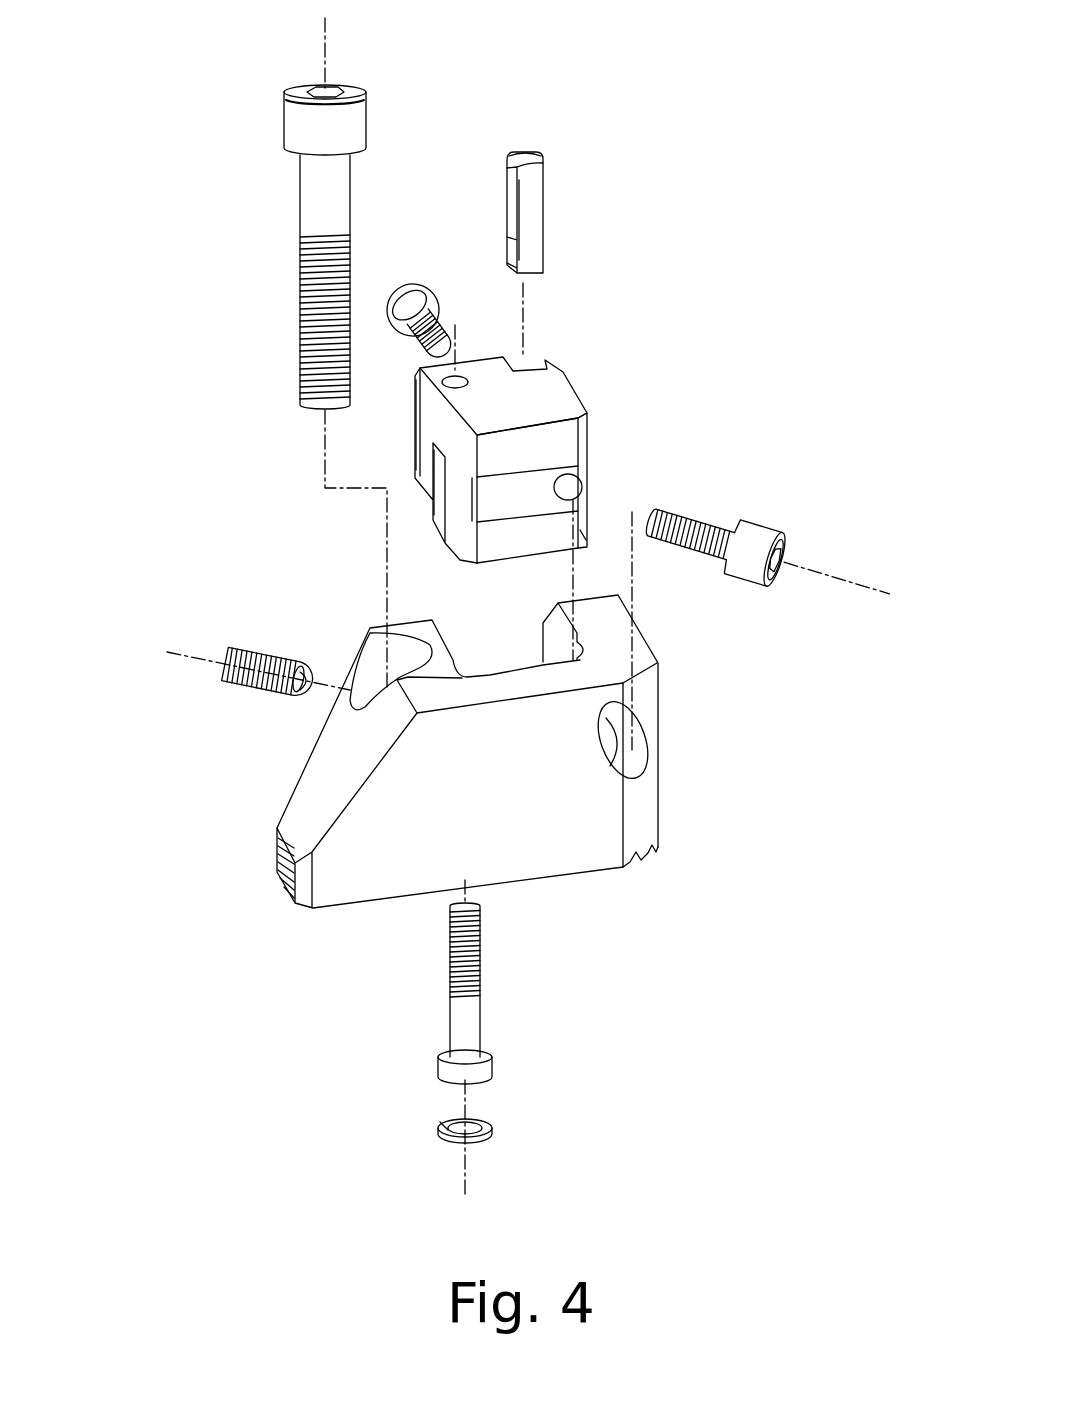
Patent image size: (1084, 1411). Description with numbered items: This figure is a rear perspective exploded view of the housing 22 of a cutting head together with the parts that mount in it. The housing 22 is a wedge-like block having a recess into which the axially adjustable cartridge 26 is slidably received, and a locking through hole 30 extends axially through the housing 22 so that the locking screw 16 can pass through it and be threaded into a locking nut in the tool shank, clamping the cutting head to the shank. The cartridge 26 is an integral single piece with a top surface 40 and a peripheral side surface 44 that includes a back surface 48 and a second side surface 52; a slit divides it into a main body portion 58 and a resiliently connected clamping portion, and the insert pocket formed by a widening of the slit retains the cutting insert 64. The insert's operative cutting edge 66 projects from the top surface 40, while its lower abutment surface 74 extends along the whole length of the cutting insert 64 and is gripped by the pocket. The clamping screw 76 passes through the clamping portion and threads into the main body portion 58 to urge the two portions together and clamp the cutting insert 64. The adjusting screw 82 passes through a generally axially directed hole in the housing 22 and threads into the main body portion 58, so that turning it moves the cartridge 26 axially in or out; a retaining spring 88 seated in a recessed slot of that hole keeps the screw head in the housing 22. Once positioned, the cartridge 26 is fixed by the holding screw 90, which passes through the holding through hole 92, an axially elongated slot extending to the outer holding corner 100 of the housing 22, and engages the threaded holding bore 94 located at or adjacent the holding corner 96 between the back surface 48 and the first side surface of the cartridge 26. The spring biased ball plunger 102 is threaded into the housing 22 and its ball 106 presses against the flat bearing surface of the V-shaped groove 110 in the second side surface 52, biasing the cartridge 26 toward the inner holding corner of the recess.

The locking screw 16 is at (295, 98).
The housing 22 is at (273, 850).
The cartridge 26 is at (487, 427).
The locking through hole 30 is at (377, 660).
The top surface 40 is at (560, 355).
The peripheral side surface 44 is at (558, 437).
The back surface 48 is at (565, 458).
The second side surface 52 is at (428, 423).
The main body portion 58 is at (500, 387).
The cutting insert 64 is at (533, 200).
The operative cutting edge 66 is at (523, 152).
The lower abutment surface 74 is at (535, 218).
The clamping screw 76 is at (409, 285).
The adjusting screw 82 is at (450, 1023).
The retaining spring 88 is at (448, 1145).
The holding screw 90 is at (763, 530).
The holding through hole 92 is at (641, 735).
The threaded holding bore 94 is at (570, 488).
The holding corner 96 is at (582, 528).
The outer holding corner 100 is at (647, 805).
The spring biased ball plunger 102 is at (262, 653).
The ball 106 is at (305, 680).
The V-shaped groove 110 is at (433, 510).